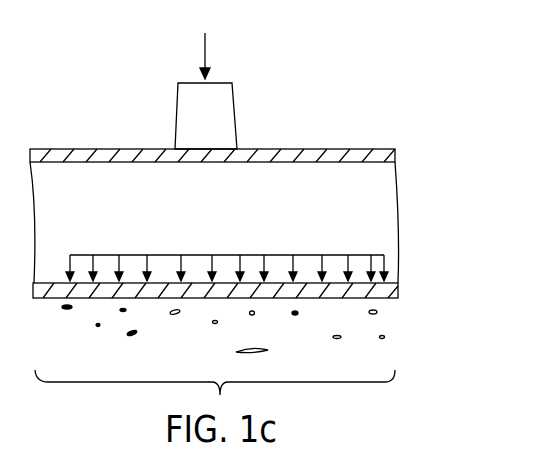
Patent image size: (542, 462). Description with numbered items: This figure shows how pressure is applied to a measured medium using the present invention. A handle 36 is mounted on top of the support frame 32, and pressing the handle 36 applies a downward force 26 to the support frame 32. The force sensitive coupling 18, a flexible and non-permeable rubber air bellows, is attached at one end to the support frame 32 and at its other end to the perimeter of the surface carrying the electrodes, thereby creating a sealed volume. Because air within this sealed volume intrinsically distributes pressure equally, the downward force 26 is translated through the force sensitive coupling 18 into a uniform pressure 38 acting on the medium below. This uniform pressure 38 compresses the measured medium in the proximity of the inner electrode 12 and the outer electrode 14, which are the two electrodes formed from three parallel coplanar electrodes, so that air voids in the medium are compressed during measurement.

The inner electrode 12 is at (193, 298).
The outer electrode 14 is at (367, 298).
The force sensitive coupling 18 is at (398, 212).
The downward force 26 is at (203, 50).
The support frame 32 is at (340, 149).
The handle 36 is at (227, 112).
The uniform pressure 38 is at (133, 255).